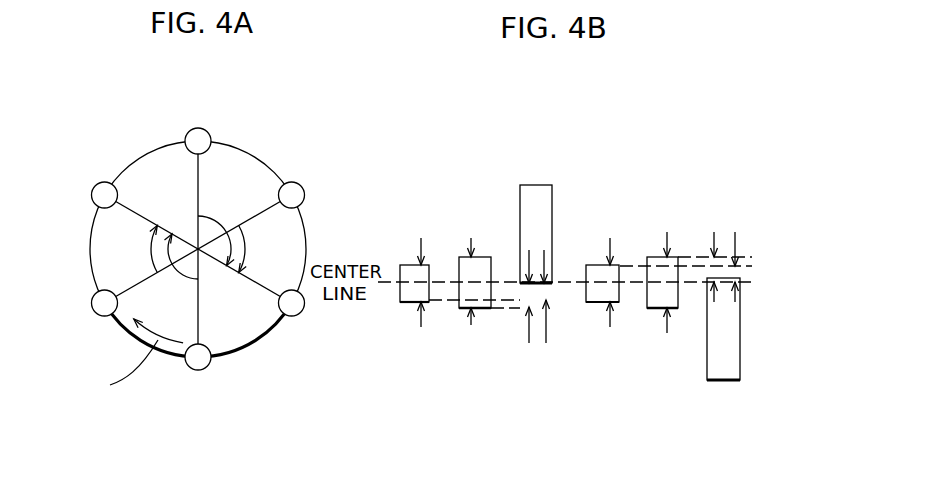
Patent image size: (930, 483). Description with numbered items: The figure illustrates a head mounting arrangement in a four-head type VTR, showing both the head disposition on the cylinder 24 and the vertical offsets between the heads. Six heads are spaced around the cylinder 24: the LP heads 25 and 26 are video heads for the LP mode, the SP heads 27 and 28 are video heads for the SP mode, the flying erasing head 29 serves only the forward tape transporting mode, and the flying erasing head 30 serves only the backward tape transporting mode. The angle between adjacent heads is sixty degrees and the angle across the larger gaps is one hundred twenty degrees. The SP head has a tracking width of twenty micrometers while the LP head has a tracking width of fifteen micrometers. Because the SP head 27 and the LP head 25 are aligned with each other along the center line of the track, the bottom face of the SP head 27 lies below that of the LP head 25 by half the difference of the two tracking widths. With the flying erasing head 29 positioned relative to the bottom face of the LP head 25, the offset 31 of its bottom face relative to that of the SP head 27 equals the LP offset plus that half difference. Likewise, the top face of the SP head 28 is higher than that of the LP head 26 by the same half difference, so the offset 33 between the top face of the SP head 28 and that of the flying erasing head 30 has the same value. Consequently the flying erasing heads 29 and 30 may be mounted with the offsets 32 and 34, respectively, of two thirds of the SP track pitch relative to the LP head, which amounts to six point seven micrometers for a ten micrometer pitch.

In FIG. 4A, the cylinder 24 is at (138, 157).
In FIG. 4A, the LP head 25 is at (201, 371).
In FIG. 4B, the LP head 25 is at (408, 265).
In FIG. 4A, the LP head 26 is at (192, 130).
In FIG. 4B, the LP head 26 is at (597, 265).
In FIG. 4A, the SP head 27 is at (97, 314).
In FIG. 4B, the SP head 27 is at (477, 257).
In FIG. 4A, the SP head 28 is at (298, 183).
In FIG. 4B, the SP head 28 is at (658, 257).
In FIG. 4A, the flying erasing head 29 is at (98, 184).
In FIG. 4B, the flying erasing head 29 is at (535, 185).
In FIG. 4A, the flying erasing head 30 is at (290, 317).
In FIG. 4B, the flying erasing head 30 is at (720, 382).
In FIG. 4B, the offset 31 is at (530, 292).
In FIG. 4B, the offset 32 is at (543, 292).
In FIG. 4B, the offset 33 is at (713, 276).
In FIG. 4B, the offset 34 is at (737, 276).